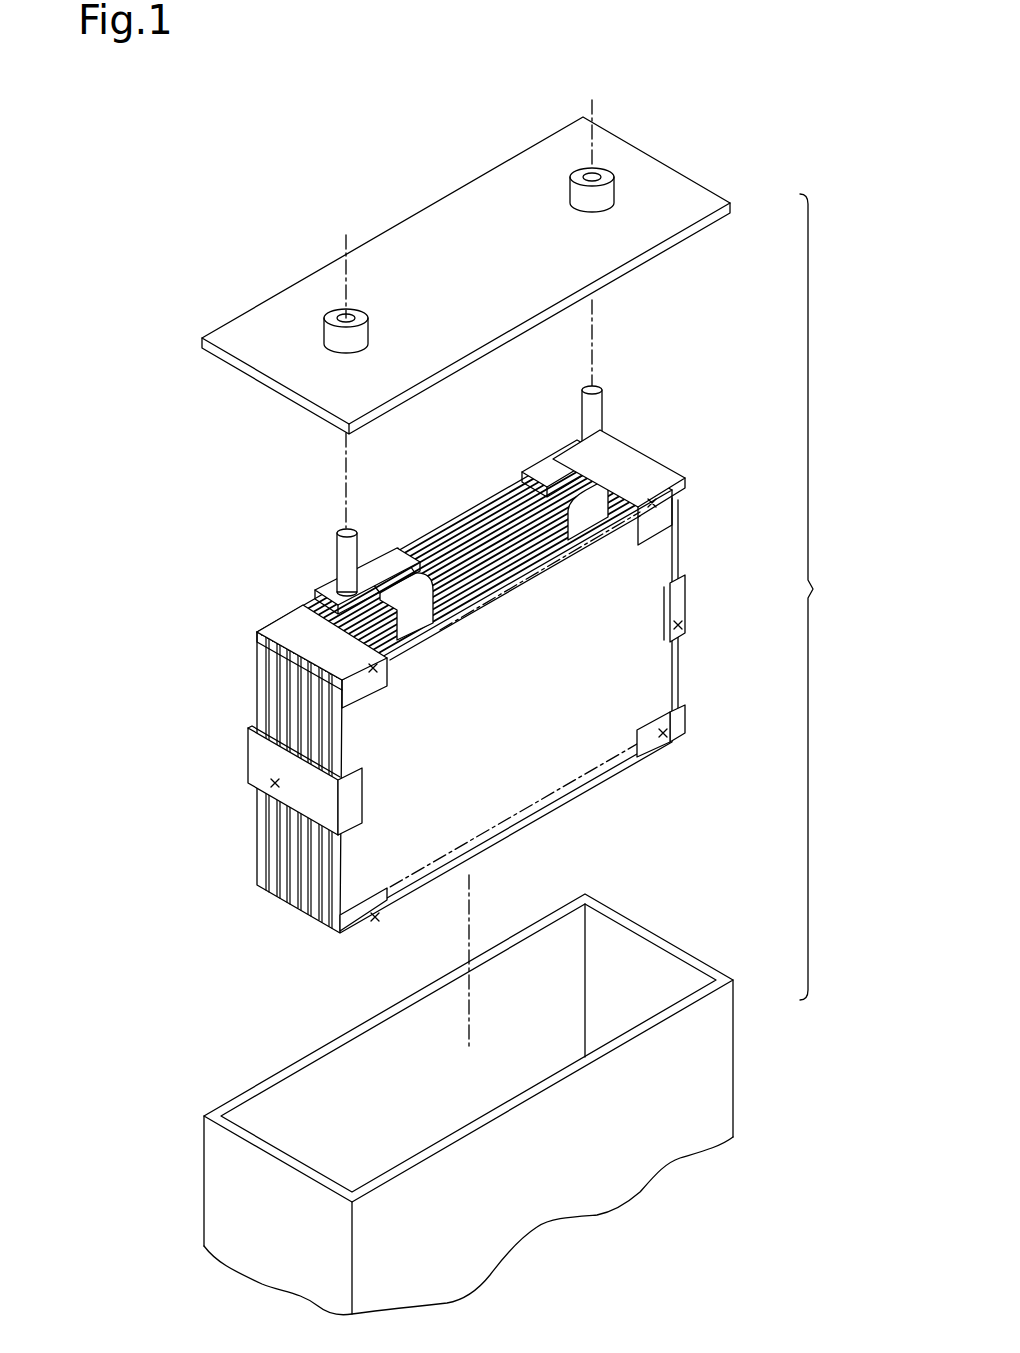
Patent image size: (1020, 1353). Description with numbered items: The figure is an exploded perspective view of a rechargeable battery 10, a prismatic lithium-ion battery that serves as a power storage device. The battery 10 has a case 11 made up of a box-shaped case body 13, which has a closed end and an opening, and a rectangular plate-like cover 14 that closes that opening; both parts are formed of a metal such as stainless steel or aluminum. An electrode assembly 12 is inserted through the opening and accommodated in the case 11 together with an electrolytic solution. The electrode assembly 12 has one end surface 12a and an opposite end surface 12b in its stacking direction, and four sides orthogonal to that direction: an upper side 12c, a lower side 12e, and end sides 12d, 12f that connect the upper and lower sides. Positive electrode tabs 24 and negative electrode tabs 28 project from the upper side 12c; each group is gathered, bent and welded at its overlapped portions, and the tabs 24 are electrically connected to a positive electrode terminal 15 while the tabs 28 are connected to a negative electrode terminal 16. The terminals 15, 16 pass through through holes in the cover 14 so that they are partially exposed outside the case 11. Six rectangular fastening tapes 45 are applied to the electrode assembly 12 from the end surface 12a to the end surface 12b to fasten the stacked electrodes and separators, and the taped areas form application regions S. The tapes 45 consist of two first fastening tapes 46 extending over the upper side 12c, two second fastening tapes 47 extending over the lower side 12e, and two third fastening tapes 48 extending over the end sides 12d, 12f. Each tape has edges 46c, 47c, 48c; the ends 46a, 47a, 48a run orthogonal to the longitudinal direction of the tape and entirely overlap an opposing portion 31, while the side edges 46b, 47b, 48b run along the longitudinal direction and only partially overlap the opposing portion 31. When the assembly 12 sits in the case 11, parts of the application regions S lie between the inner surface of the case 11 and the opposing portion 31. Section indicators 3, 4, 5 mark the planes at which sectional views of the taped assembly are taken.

The rechargeable battery 10 is at (708, 92).
The case 11 is at (824, 597).
The electrode assembly 12 is at (290, 936).
The end surface 12a is at (488, 860).
The end surface 12b is at (415, 548).
The upper side 12c is at (480, 520).
The end side 12d is at (680, 686).
The lower side 12e is at (545, 846).
The end side 12f is at (262, 900).
The case body 13 is at (733, 980).
The cover 14 is at (733, 205).
The positive electrode terminal 15 is at (342, 564).
The negative electrode terminal 16 is at (596, 420).
The positive electrode tabs 24 is at (418, 603).
The negative electrode tabs 28 is at (592, 545).
The opposing portion 31 is at (598, 806).
The fastening tapes 45 is at (474, 685).
The first fastening tapes 46 is at (464, 549).
The end 46a is at (362, 698).
The side edge 46b is at (280, 654).
The edge 46c is at (300, 666).
The second fastening tapes 47 is at (525, 835).
The end 47a is at (365, 896).
The side edge 47b is at (395, 915).
The edge 47c is at (333, 925).
The third fastening tapes 48 is at (474, 702).
The end 48a is at (365, 785).
The side edge 48b is at (345, 768).
The edge 48c is at (352, 820).
The application regions S is at (660, 503).
The section line for FIG. 3 is at (132, 535).
The section line for FIG. 4 is at (478, 388).
The section line for FIG. 5 is at (115, 676).